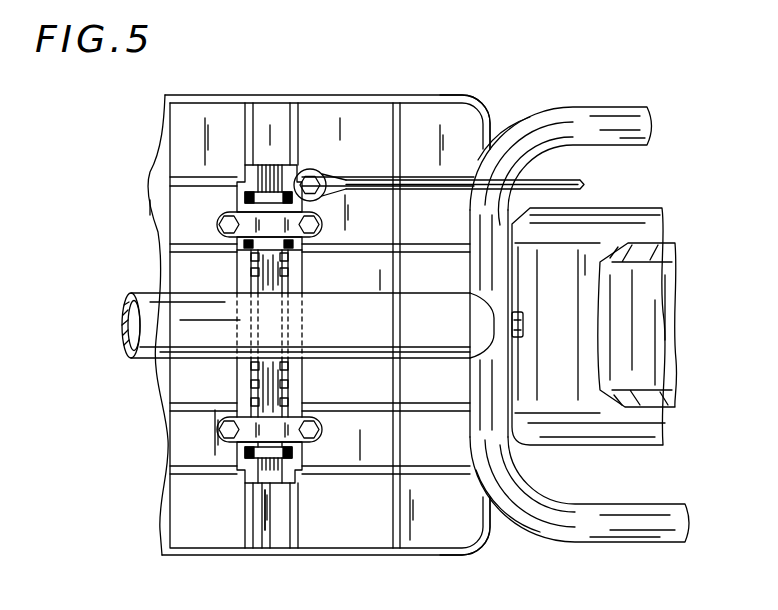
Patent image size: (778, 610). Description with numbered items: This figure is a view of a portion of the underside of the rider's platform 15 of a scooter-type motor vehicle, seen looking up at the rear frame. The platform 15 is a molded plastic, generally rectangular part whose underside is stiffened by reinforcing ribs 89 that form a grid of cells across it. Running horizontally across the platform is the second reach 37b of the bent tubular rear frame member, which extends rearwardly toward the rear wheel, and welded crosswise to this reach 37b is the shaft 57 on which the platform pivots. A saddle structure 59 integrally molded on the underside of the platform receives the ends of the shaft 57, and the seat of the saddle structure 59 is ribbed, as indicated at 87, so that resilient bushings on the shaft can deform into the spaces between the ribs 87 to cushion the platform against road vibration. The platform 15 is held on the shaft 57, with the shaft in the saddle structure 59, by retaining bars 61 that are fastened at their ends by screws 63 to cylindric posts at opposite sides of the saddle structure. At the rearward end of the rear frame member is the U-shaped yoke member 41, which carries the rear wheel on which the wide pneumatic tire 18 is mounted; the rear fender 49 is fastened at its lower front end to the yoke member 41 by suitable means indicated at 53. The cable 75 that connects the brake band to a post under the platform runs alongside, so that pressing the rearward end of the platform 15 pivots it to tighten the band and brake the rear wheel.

The rider's platform 15 is at (170, 135).
The pneumatic tire 18 is at (655, 292).
The second reach 37b is at (140, 340).
The U-shaped yoke member 41 is at (557, 110).
The rear fender 49 is at (632, 207).
The fastening means 53 is at (520, 312).
The shaft 57 is at (265, 520).
The saddle structure 59 is at (237, 380).
The retaining bars 61 is at (247, 220).
The screws 63 is at (217, 224).
The cable 75 is at (549, 178).
The ribs 87 is at (246, 272).
The reinforcing ribs 89 is at (402, 132).